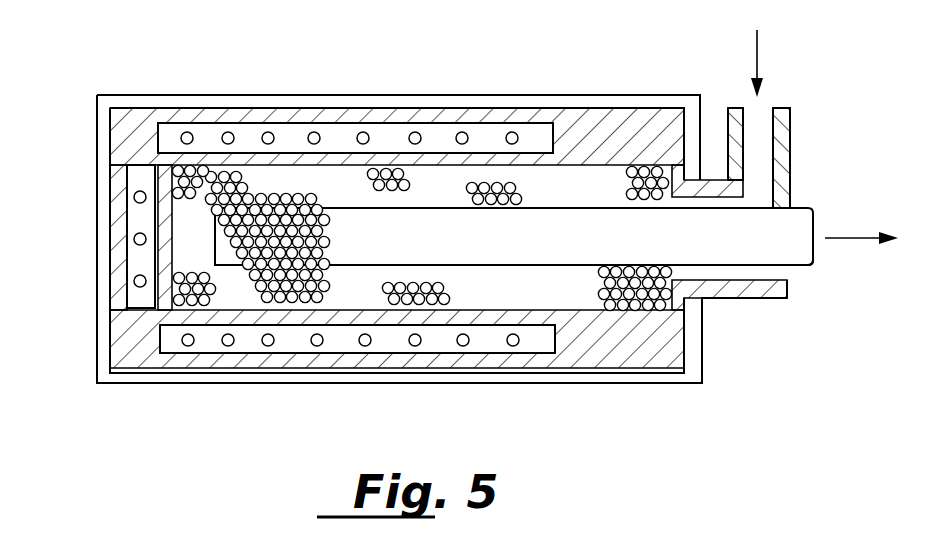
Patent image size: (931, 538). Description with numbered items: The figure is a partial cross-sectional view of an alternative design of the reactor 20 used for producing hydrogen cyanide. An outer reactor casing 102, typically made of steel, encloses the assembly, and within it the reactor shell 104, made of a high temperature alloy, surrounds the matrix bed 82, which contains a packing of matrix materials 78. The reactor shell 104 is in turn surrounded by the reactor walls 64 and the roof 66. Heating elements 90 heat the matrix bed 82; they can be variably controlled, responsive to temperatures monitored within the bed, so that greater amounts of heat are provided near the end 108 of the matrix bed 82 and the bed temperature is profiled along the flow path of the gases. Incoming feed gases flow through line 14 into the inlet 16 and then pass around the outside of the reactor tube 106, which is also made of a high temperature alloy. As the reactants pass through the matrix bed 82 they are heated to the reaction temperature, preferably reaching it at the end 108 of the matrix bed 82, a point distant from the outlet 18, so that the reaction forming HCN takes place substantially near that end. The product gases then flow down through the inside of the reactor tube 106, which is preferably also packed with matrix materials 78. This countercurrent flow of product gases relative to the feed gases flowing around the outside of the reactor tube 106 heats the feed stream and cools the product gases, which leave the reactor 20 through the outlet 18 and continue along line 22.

The line 14 is at (758, 52).
The inlet 16 is at (765, 110).
The outlet 18 is at (818, 252).
The reactor 20 is at (118, 396).
The line 22 is at (848, 238).
The reactor walls 64 is at (368, 122).
The roof 66 is at (157, 153).
The matrix materials 78 is at (372, 172).
The matrix bed 82 is at (592, 200).
The heating elements 90 is at (127, 236).
The reactor casing 102 is at (253, 104).
The reactor shell 104 is at (486, 157).
The reactor tube 106 is at (632, 210).
The end of the matrix bed 108 is at (218, 256).